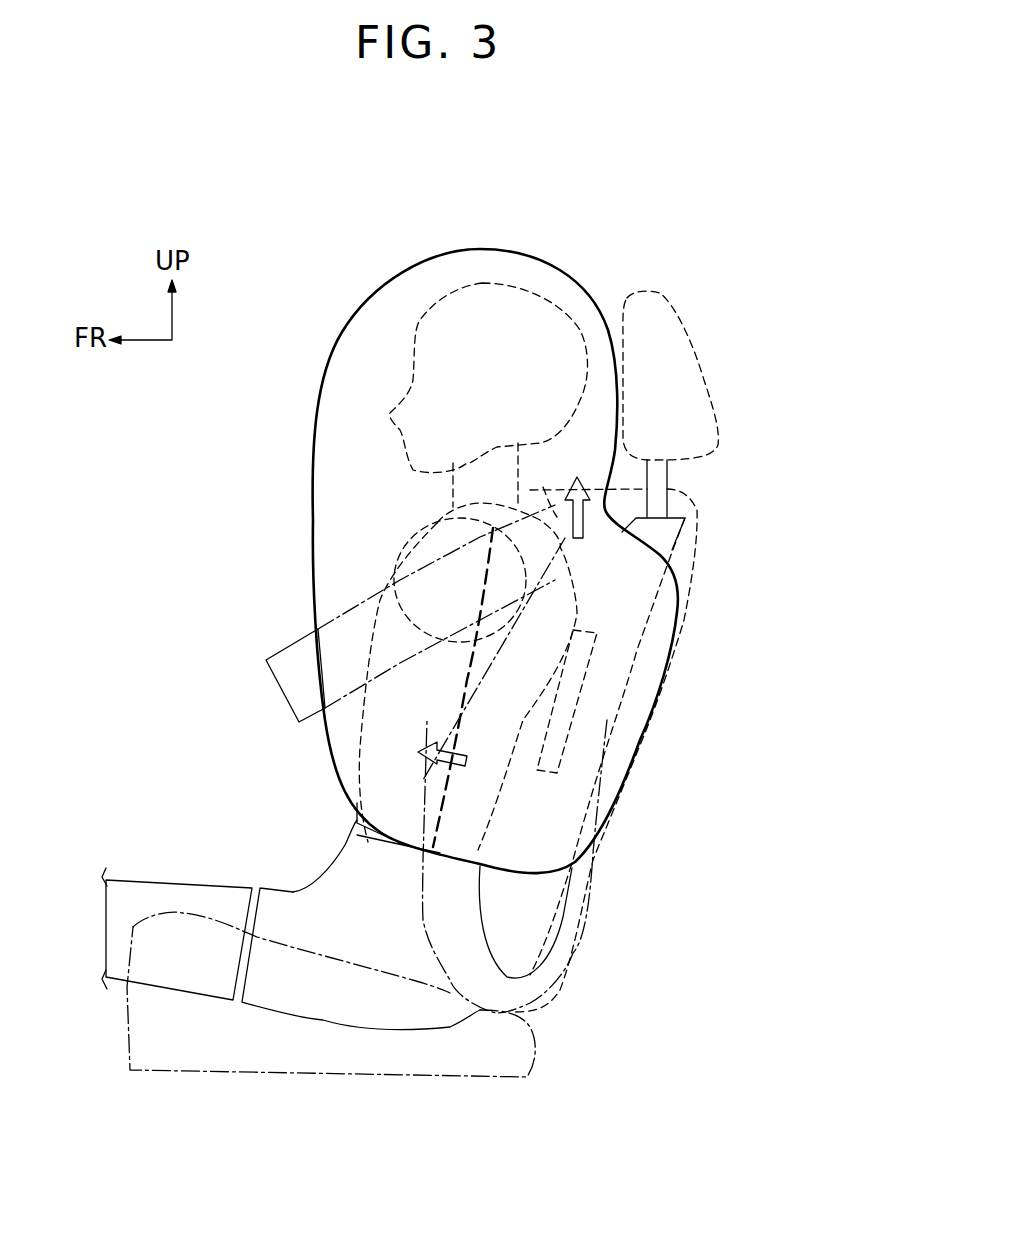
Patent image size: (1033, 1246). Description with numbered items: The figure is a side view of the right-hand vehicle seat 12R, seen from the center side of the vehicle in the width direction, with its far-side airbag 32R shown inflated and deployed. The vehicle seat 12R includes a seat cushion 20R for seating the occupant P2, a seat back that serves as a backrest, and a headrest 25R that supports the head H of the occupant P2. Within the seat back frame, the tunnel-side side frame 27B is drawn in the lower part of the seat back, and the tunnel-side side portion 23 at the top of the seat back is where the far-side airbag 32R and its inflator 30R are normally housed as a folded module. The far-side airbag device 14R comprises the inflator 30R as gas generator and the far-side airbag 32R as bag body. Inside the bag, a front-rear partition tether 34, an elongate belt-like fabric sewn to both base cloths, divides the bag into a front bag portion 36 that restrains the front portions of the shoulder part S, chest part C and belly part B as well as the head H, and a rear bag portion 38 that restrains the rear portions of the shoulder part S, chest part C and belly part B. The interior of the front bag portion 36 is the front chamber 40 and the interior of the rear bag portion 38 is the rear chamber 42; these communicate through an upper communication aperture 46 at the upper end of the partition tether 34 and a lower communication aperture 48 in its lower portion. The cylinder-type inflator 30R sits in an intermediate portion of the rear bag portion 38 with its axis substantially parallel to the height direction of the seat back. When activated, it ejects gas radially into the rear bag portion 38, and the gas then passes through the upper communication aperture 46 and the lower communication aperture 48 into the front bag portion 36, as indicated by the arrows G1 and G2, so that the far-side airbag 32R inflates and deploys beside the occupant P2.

The far-side airbag 32R is at (325, 353).
The far-side airbag device 14R is at (287, 421).
The front bag portion 36 is at (327, 485).
The front chamber 40 is at (320, 538).
The upper communication aperture 46 is at (556, 477).
The headrest 25R is at (657, 292).
The tunnel-side side portion 23 is at (697, 508).
The front-rear partition tether 34 is at (467, 673).
The inflator 30R is at (550, 713).
The rear bag portion 38 is at (630, 613).
The rear chamber 42 is at (607, 677).
The lower communication aperture 48 is at (455, 740).
The tunnel-side side frame 27B is at (563, 917).
The seat cushion 20R is at (247, 1070).
The vehicle seat 12R is at (403, 1076).
The head part H is at (482, 283).
The shoulder part S is at (437, 523).
The chest part C is at (385, 600).
The belly part B is at (360, 768).
The gas flow arrow G1 is at (608, 492).
The gas flow arrow G2 is at (430, 768).
The occupant P2 is at (335, 868).